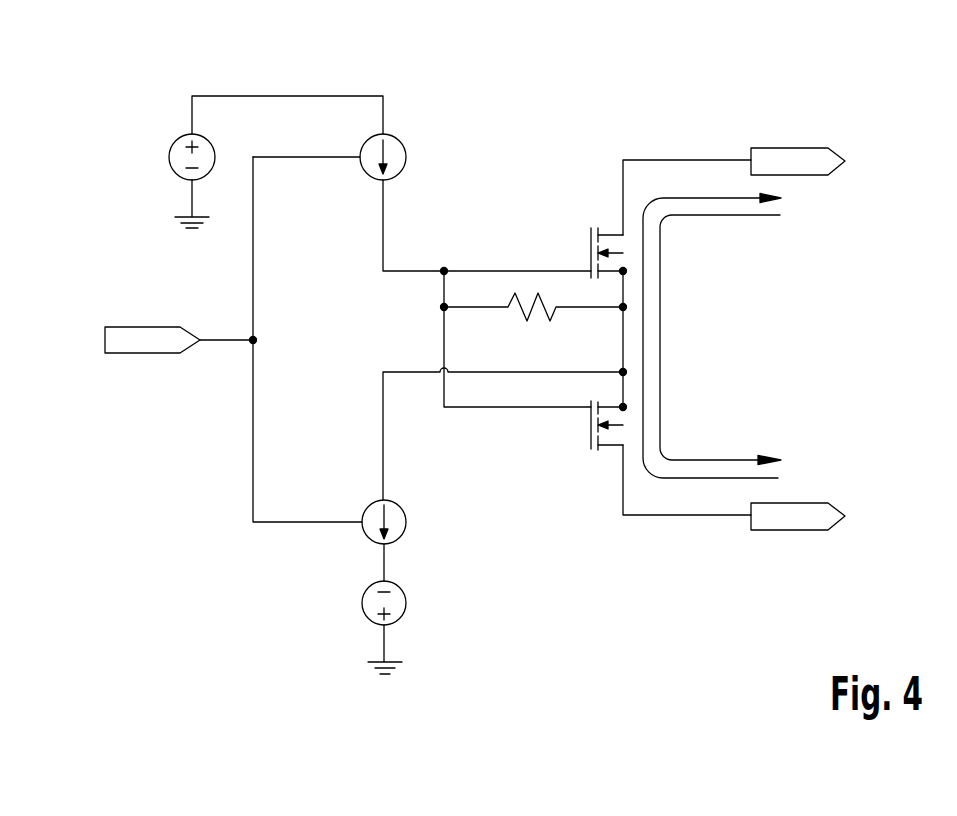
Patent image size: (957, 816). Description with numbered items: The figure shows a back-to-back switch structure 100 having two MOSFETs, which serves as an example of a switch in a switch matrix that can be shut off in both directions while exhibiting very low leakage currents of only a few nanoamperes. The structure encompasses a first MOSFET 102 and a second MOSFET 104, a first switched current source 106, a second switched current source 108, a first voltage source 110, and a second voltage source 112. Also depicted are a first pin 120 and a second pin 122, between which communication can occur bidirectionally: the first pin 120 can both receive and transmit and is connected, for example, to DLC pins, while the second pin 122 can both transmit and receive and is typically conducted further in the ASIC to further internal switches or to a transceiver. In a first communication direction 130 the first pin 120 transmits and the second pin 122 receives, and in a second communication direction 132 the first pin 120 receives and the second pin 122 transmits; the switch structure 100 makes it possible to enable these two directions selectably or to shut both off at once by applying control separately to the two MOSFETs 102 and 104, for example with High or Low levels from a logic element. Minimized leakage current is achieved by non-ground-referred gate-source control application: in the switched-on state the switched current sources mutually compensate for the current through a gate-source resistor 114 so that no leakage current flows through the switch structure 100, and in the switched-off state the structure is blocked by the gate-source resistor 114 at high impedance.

The back-to-back switch structure 100 is at (832, 81).
The first MOSFET 102 is at (633, 253).
The second MOSFET 104 is at (633, 424).
The first switched current source 106 is at (406, 157).
The second switched current source 108 is at (406, 522).
The first voltage source 110 is at (168, 158).
The second voltage source 112 is at (406, 603).
The gate-source resistor 114 is at (520, 312).
The first pin 120 is at (785, 148).
The second pin 122 is at (786, 531).
The first communication direction 130 is at (695, 198).
The second communication direction 132 is at (760, 215).